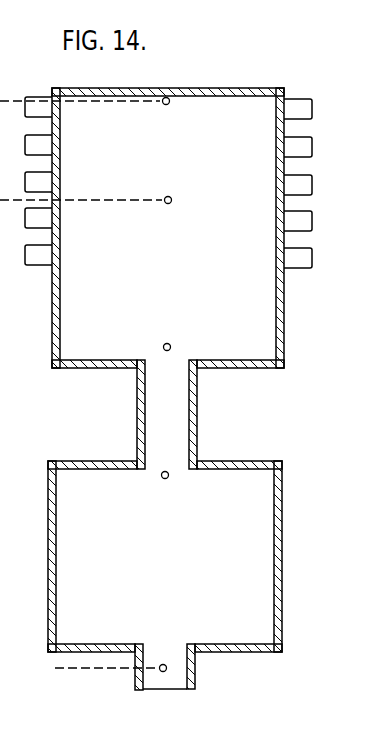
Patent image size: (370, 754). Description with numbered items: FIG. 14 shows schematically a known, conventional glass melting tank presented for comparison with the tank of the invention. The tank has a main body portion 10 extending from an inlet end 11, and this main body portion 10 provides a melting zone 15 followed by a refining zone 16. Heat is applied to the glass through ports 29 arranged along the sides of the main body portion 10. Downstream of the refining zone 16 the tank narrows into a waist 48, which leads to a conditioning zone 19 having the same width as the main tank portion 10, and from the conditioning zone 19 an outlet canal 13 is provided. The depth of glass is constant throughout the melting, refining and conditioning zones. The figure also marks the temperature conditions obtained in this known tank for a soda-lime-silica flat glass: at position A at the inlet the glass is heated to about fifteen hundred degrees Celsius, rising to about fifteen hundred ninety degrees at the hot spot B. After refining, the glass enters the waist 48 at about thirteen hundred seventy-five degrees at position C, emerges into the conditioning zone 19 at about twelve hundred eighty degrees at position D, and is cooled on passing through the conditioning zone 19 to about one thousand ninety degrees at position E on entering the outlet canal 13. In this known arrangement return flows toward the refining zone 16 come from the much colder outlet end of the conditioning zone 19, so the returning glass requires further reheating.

The main body portion 10 is at (151, 214).
The inlet end 11 is at (144, 88).
The outlet canal 13 is at (194, 670).
The melting zone 15 is at (177, 160).
The refining zone 16 is at (175, 329).
The conditioning zone 19 is at (174, 594).
The ports 29 is at (312, 255).
The waist 48 is at (197, 426).
The position A is at (169, 103).
The hot spot B is at (171, 203).
The position C is at (171, 347).
The position D is at (168, 478).
The position E is at (162, 672).